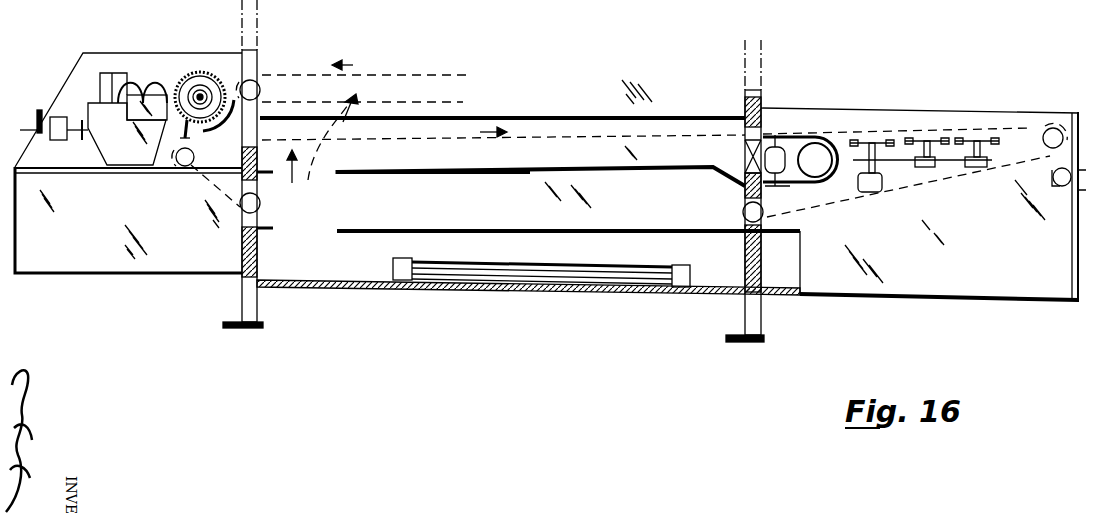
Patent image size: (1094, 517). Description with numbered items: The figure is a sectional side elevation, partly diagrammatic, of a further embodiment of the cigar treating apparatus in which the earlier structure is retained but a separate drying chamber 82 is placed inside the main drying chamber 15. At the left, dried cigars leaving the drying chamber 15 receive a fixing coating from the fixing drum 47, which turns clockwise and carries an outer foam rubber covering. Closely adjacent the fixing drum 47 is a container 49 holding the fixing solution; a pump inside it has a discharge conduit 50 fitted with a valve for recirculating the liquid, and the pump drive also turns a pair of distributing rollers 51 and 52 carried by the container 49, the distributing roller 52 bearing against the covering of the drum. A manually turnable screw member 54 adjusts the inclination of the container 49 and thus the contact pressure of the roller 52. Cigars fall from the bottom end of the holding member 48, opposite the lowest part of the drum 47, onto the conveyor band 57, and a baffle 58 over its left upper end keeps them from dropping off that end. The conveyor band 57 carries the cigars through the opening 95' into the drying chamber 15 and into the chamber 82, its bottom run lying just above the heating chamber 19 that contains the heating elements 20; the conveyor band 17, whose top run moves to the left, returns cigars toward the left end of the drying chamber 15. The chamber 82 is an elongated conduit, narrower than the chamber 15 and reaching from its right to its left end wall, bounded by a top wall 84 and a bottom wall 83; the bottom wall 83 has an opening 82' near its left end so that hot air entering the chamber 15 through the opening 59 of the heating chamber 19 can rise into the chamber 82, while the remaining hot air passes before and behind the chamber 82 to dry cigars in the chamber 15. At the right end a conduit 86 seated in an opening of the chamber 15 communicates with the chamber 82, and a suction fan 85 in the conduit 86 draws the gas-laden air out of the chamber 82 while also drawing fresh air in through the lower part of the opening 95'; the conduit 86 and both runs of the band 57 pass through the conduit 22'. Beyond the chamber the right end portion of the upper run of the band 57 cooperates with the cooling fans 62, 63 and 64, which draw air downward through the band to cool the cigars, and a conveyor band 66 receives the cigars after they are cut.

The drying chamber 15 is at (399, 101).
The conveyor band 17 is at (428, 75).
The heating chamber 19 is at (501, 255).
The heating elements 20 is at (638, 266).
The conduit 22' is at (778, 201).
The fixing drum 47 is at (213, 72).
The holding member 48 is at (231, 112).
The container 49 is at (126, 153).
The discharge conduit 50 is at (86, 68).
The distributing roller 51 is at (144, 83).
The distributing roller 52 is at (157, 94).
The screw member 54 is at (33, 112).
The conveyor band 57 is at (193, 183).
The baffle 58 is at (167, 132).
The opening 59 is at (300, 230).
The fan 62 is at (885, 128).
The fan 63 is at (940, 128).
The fan 64 is at (990, 128).
The conveyor band 66 is at (1062, 187).
The drying chamber 82 is at (433, 157).
The opening 82' is at (344, 160).
The bottom wall 83 is at (549, 171).
The top wall 84 is at (686, 117).
The suction fan 85 is at (777, 140).
The conduit 86 is at (820, 140).
The opening 95' is at (257, 164).